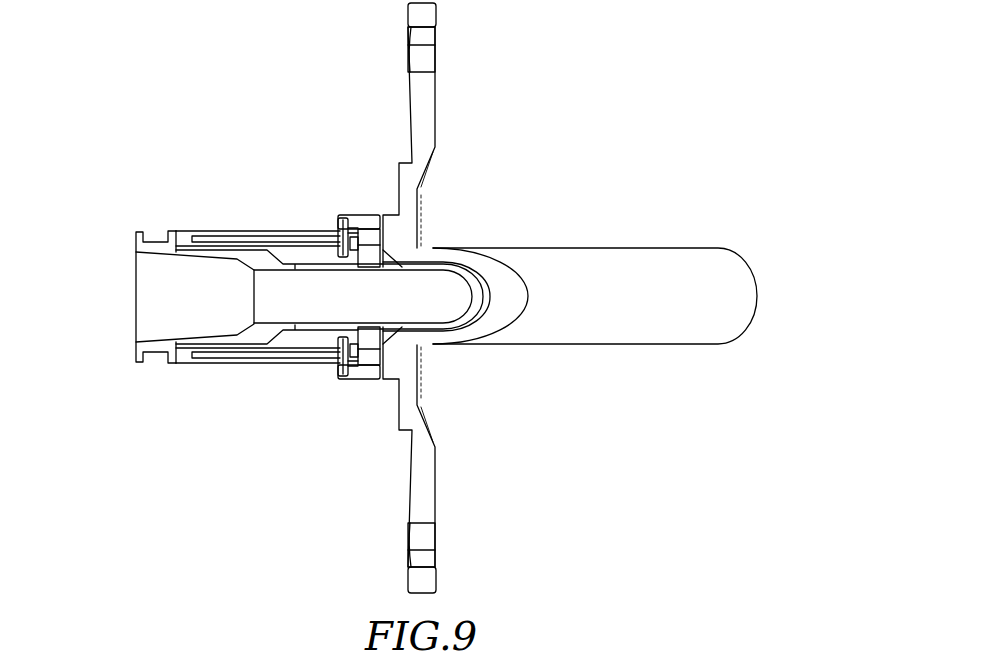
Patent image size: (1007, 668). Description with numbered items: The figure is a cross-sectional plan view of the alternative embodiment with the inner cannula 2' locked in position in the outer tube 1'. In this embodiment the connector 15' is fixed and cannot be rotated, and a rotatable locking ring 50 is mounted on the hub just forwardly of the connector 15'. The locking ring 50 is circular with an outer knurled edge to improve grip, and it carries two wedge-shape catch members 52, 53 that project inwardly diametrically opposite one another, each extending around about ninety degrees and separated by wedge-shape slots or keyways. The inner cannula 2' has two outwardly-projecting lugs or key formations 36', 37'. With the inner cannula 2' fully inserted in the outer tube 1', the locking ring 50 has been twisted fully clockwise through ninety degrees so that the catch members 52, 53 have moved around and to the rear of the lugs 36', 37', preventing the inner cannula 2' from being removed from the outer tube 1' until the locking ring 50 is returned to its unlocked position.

The outer tube 1' is at (595, 273).
The inner cannula 2' is at (166, 324).
The fixed connector 15' is at (267, 270).
The lug 36' is at (429, 460).
The lug 37' is at (443, 135).
The rotatable locking ring 50 is at (361, 215).
The catch member 52 is at (336, 228).
The catch member 53 is at (351, 348).